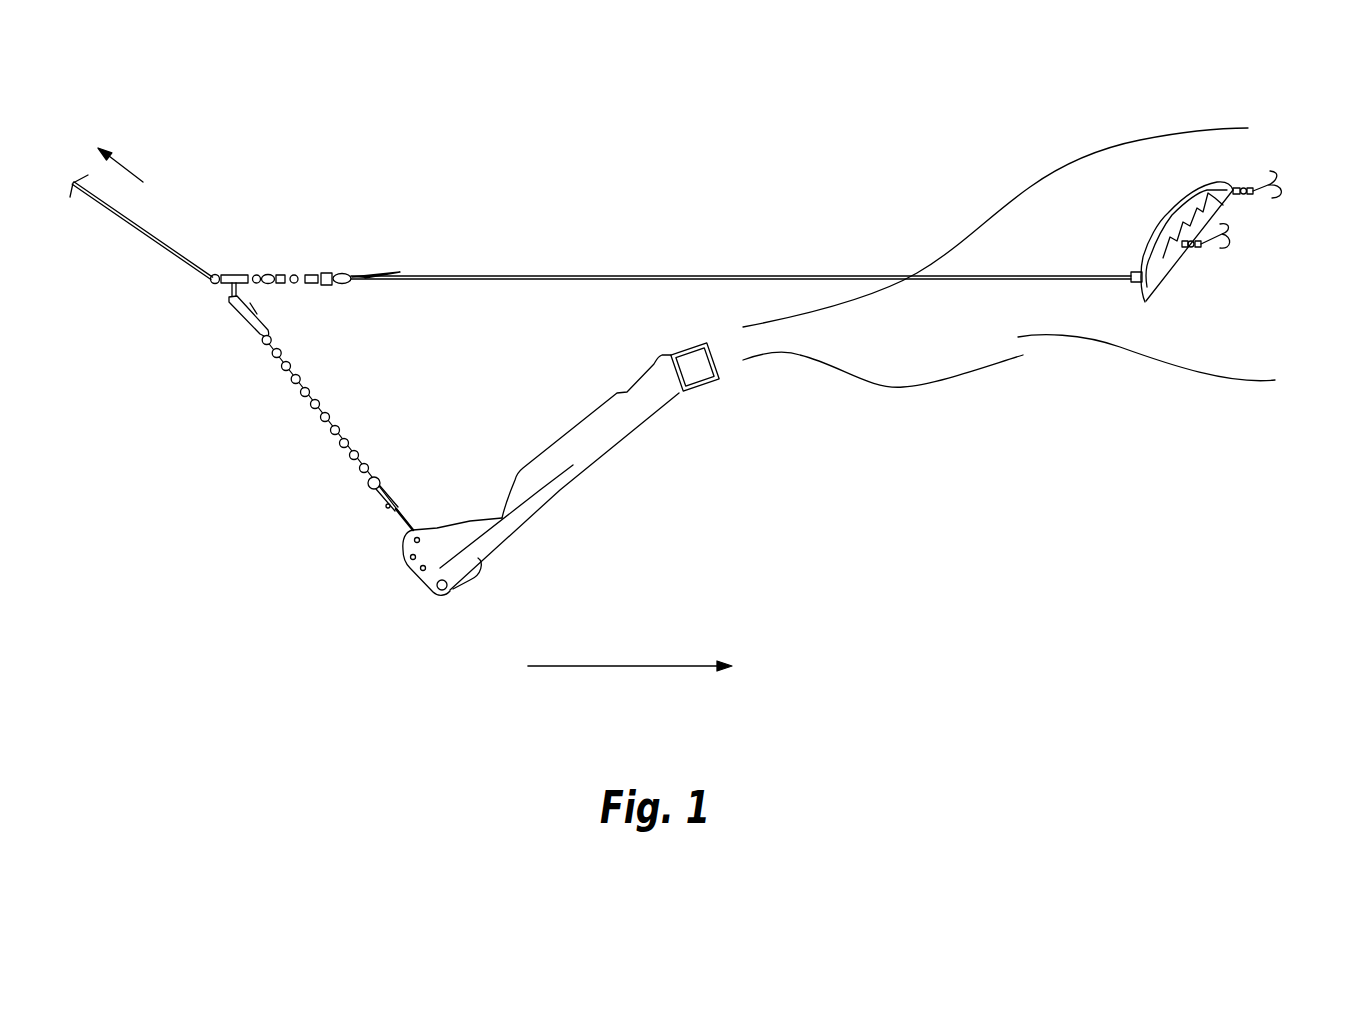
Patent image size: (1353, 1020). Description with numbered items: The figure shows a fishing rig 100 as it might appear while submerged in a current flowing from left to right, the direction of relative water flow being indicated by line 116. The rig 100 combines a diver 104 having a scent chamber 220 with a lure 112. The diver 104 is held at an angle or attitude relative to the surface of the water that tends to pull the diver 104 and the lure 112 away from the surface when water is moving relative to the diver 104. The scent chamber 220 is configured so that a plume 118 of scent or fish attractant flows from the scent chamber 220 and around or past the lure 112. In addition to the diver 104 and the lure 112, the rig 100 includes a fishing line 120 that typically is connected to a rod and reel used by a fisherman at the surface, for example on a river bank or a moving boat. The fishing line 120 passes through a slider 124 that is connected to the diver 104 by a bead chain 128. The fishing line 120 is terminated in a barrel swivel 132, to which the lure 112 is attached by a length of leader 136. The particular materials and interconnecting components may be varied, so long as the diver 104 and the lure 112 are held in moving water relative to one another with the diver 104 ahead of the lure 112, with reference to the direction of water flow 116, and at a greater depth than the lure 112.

The fishing rig 100 is at (714, 173).
The diver 104 is at (605, 437).
The lure 112 is at (1163, 258).
The direction of relative water flow 116 is at (623, 663).
The plume 118 is at (1035, 363).
The fishing line 120 is at (170, 251).
The slider 124 is at (228, 284).
The bead chain 128 is at (313, 404).
The barrel swivel 132 is at (308, 273).
The leader 136 is at (553, 277).
The scent chamber 220 is at (695, 368).